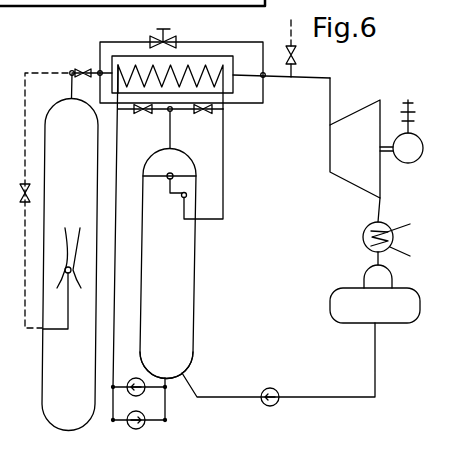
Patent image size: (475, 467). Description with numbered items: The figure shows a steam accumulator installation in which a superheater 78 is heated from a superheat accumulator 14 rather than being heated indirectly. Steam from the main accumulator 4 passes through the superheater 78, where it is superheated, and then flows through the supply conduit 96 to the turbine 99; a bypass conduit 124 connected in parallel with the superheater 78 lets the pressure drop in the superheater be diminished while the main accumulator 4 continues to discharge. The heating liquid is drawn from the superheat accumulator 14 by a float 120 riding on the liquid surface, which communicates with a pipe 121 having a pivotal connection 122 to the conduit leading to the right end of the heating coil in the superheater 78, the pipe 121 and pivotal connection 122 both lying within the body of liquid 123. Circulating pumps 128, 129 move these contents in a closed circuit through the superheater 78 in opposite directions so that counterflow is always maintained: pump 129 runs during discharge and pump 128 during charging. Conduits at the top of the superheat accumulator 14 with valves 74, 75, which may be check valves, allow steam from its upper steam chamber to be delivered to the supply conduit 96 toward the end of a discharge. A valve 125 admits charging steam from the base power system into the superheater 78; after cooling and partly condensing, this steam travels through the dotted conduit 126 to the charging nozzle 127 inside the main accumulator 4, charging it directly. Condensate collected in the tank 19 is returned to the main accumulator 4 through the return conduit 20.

The main accumulator 4 is at (58, 168).
The superheat accumulator 14 is at (188, 262).
The tank 19 is at (352, 311).
The return conduit 20 is at (373, 379).
The valve 74 is at (155, 112).
The valve 75 is at (200, 122).
The superheater 78 is at (230, 78).
The supply conduit 96 is at (343, 104).
The turbine 99 is at (343, 140).
The float 120 is at (167, 175).
The pipe 121 is at (175, 198).
The pivotal connection 122 is at (186, 192).
The body of liquid 123 is at (177, 338).
The bypass conduit 124 is at (230, 39).
The valve 125 is at (308, 48).
The conduit 126 is at (35, 72).
The charging nozzle 127 is at (88, 210).
The circulating pump 128 is at (145, 392).
The circulating pump 129 is at (145, 425).